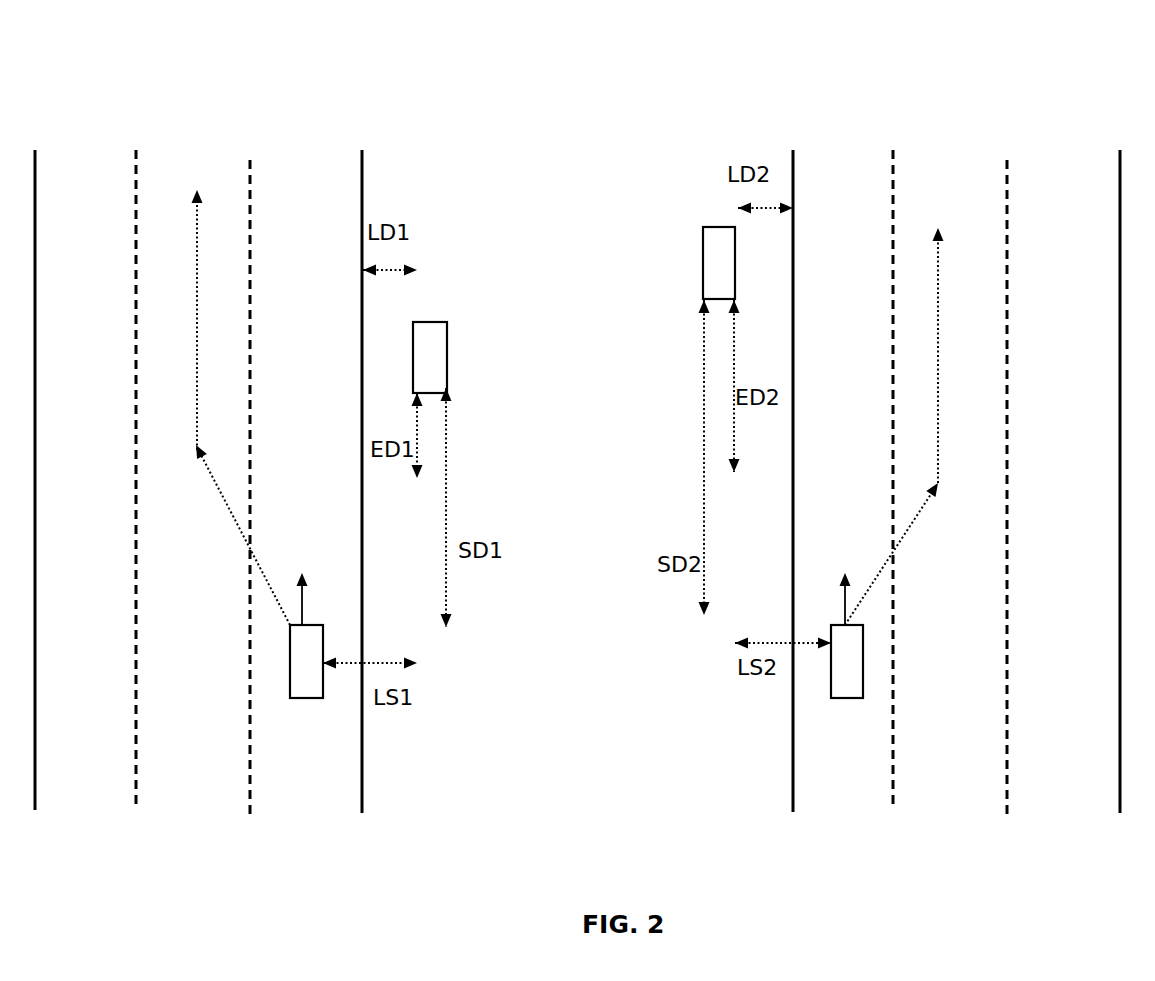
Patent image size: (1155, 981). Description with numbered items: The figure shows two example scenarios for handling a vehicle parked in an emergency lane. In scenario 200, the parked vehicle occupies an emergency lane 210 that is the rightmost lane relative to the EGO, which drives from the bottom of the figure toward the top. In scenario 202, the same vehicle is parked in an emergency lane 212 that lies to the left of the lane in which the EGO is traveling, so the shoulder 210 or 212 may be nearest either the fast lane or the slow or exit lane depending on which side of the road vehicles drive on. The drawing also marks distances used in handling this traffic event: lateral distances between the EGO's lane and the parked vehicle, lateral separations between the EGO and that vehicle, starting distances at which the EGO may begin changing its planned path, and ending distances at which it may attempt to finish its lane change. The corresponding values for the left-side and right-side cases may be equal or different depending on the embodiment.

The scenario 200 is at (142, 420).
The scenario 202 is at (1006, 417).
The emergency lane 210 is at (447, 836).
The emergency lane 212 is at (742, 836).